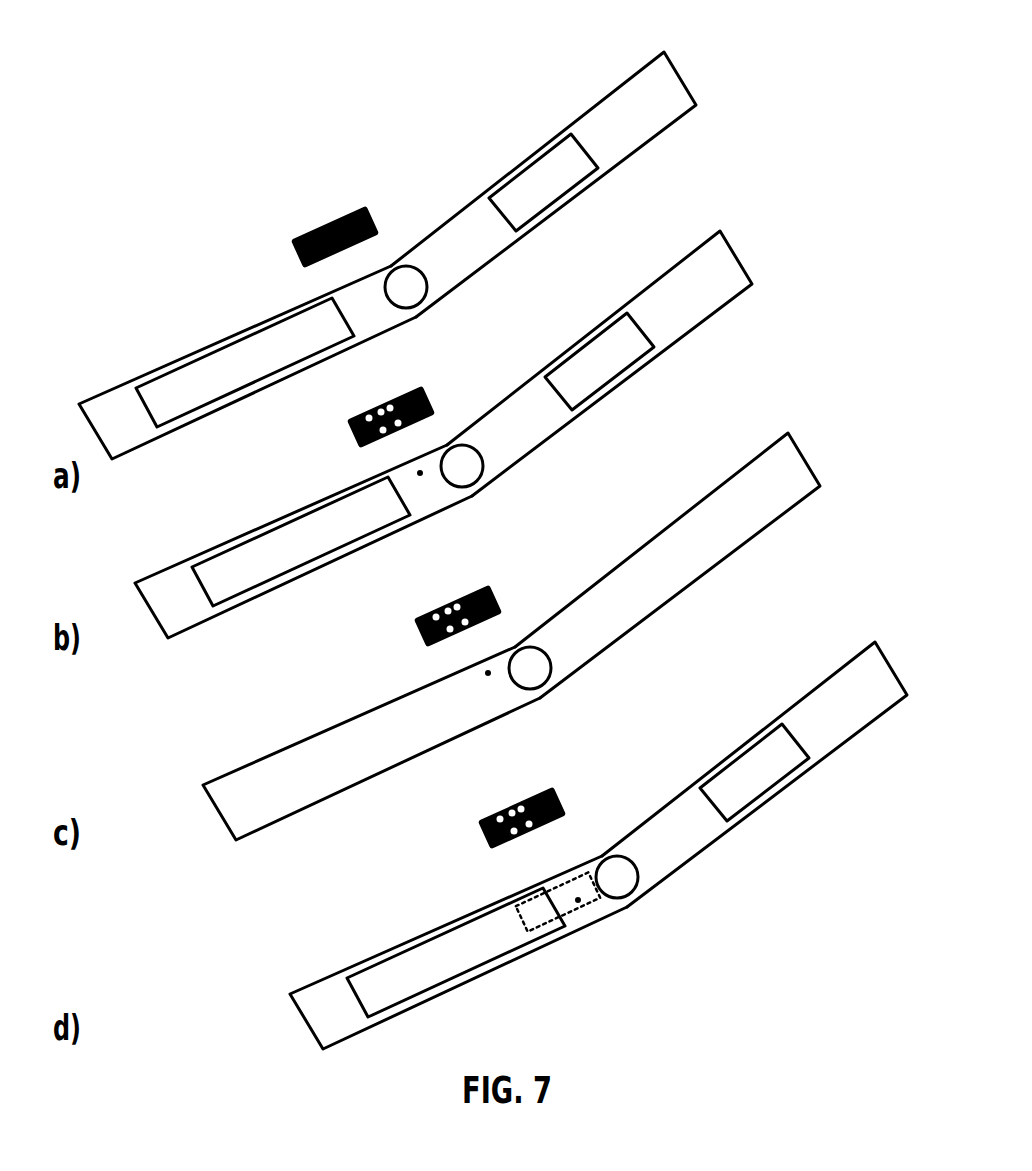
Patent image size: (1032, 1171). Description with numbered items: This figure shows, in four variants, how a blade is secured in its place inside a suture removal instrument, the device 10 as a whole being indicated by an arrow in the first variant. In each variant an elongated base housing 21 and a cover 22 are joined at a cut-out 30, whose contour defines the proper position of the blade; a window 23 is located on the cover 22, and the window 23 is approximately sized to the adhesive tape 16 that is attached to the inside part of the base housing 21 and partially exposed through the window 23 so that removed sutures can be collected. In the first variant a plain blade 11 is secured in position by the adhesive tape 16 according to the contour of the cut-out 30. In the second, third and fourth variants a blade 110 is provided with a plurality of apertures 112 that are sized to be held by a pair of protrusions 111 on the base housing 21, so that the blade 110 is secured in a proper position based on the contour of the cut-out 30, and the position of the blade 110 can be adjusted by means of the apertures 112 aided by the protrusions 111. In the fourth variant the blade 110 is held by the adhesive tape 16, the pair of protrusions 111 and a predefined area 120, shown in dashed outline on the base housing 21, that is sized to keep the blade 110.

The device 10 is at (177, 233).
The blade 11 is at (307, 235).
The adhesive tape 16 is at (245, 350).
The base housing 21 is at (110, 403).
The cover 22 is at (630, 102).
The window 23 is at (530, 182).
The cut-out 30 is at (424, 268).
The blade 110 is at (417, 388).
The protrusions 111 is at (428, 472).
The apertures 112 is at (378, 412).
The sensor receiving region 120 is at (563, 910).